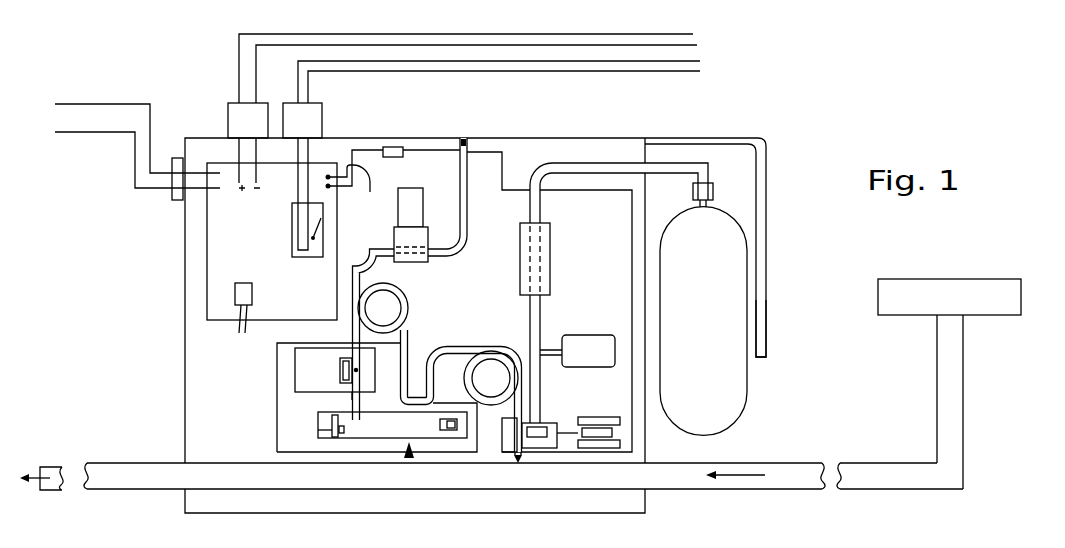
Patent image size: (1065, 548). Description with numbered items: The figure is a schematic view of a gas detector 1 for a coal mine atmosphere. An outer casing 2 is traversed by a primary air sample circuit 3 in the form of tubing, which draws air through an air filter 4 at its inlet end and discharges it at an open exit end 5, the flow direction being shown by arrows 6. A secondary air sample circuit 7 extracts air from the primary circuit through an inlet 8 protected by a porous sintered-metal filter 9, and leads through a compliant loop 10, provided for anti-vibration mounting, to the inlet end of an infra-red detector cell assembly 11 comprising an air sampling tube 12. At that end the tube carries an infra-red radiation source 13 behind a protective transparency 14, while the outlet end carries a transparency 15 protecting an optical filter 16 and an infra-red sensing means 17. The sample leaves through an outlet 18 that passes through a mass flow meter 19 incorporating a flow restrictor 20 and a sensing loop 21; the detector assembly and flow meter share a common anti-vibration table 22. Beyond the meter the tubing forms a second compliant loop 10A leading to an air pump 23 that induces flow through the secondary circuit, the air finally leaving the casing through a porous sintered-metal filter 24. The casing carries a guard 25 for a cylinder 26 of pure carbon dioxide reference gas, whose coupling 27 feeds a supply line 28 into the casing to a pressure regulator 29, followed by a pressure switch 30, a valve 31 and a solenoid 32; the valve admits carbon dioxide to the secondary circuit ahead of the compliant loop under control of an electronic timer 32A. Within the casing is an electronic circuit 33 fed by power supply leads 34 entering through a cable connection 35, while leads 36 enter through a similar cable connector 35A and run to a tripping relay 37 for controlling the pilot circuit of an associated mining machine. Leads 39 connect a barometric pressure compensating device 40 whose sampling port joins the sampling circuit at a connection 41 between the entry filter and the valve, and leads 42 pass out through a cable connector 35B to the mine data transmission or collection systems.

The gas detector 1 is at (178, 370).
The outer casing 2 is at (555, 137).
The primary air sample circuit 3 is at (684, 490).
The air filter 4 is at (945, 287).
The exit end 5 is at (50, 468).
The arrows 6 is at (50, 490).
The secondary air sample circuit 7 is at (454, 254).
The inlet 8 is at (502, 436).
The porous sintered-metal filter 9 is at (516, 462).
The compliant loop 10 is at (504, 348).
The second compliant loop 10A is at (394, 284).
The infra-red detector cell assembly 11 is at (409, 458).
The air sampling tube 12 is at (387, 440).
The infra-red radiation source 13 is at (452, 430).
The transparency 14 is at (446, 430).
The transparency 15 is at (344, 433).
The optical filter 16 is at (336, 438).
The infra-red sensing means 17 is at (325, 436).
The outlet 18 is at (355, 398).
The mass flow meter 19 is at (297, 381).
The flow restrictor 20 is at (356, 370).
The sensing loop 21 is at (340, 369).
The common anti-vibration table 22 is at (277, 430).
The air pump 23 is at (416, 200).
The porous sintered-metal filter 24 is at (466, 140).
The guard 25 is at (768, 153).
The cylinder 26 is at (735, 386).
The coupling 27 is at (715, 190).
The supply line 28 is at (613, 162).
The CO2 pressure regulator 29 is at (549, 240).
The CO2 pressure switch 30 is at (594, 338).
The valve 31 is at (540, 448).
The solenoid 32 is at (596, 448).
The electronic timer 32A is at (252, 295).
The electronic circuit 33 is at (223, 219).
The power supply leads 34 is at (693, 34).
The cable connection 35 is at (230, 104).
The cable connector 35A is at (322, 113).
The cable connector 35B is at (176, 158).
The leads 36 is at (700, 61).
The tripping relay 37 is at (324, 221).
The leads 39 is at (360, 184).
The barometric pressure compensating device 40 is at (400, 147).
The sampling port connection 41 is at (521, 462).
The leads 42 is at (104, 130).